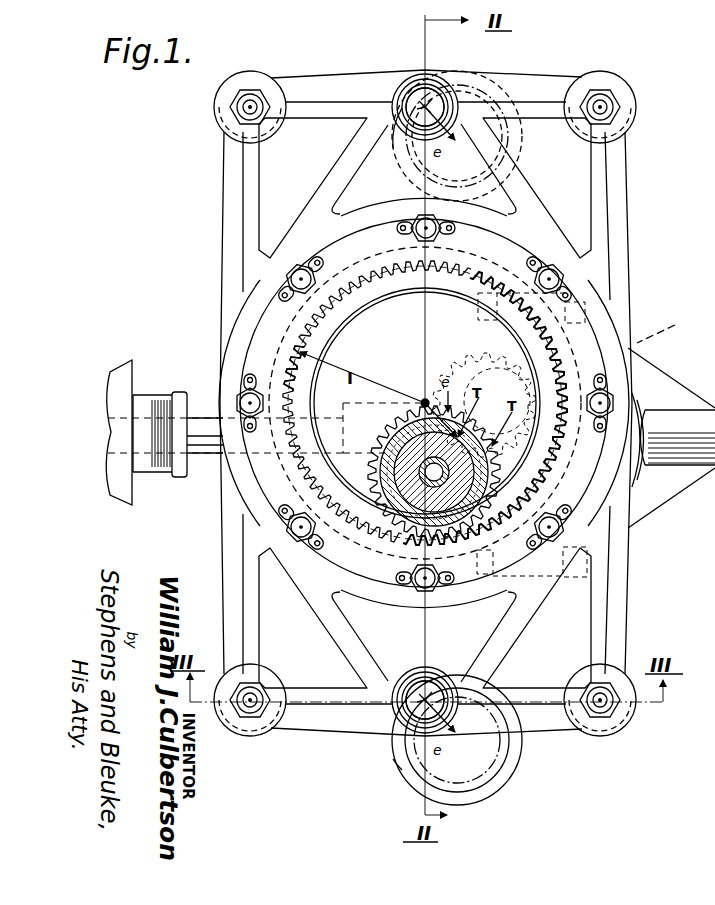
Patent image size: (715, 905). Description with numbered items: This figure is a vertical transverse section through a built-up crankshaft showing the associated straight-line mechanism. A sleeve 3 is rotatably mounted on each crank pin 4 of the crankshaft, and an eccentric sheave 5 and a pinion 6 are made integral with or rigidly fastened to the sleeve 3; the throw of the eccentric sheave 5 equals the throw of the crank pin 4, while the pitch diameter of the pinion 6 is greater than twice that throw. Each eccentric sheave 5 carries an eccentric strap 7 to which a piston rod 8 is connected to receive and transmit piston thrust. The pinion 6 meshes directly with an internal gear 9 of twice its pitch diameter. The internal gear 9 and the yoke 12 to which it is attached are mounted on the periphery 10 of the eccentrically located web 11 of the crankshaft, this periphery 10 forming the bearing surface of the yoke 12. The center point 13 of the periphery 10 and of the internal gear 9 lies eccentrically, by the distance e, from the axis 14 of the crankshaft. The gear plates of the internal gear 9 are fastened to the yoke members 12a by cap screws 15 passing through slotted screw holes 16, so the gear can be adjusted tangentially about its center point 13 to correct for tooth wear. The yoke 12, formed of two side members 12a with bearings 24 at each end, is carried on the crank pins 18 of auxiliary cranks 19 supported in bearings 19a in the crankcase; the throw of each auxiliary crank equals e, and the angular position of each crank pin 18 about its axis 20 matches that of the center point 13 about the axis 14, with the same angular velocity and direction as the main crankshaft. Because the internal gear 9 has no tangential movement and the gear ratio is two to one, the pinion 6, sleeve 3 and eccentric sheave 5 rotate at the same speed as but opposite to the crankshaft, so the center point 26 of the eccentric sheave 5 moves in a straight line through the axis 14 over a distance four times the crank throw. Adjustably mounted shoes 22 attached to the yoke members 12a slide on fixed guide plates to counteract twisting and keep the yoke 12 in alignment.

The sleeve 3 is at (387, 503).
The crank pin 4 is at (379, 544).
The eccentric sheave 5 is at (663, 326).
The pinion 6 is at (288, 480).
The eccentric strap 7 is at (657, 385).
The piston rod 8 is at (201, 425).
The internal gear 9 is at (299, 329).
The periphery 10 is at (388, 300).
The web 11 is at (357, 335).
The yoke 12 is at (622, 215).
The yoke member 12a is at (604, 236).
The center point 13 is at (421, 400).
The axis 14 is at (466, 392).
The cap screw 15 is at (407, 222).
The screw hole 16 is at (446, 234).
The crank pin 18 is at (434, 112).
The auxiliary crank 19 is at (512, 154).
The bearing 19a is at (392, 147).
The axis 20 is at (460, 128).
The shoe 22 is at (233, 97).
The bearing 24 is at (401, 81).
The center point 26 is at (531, 434).